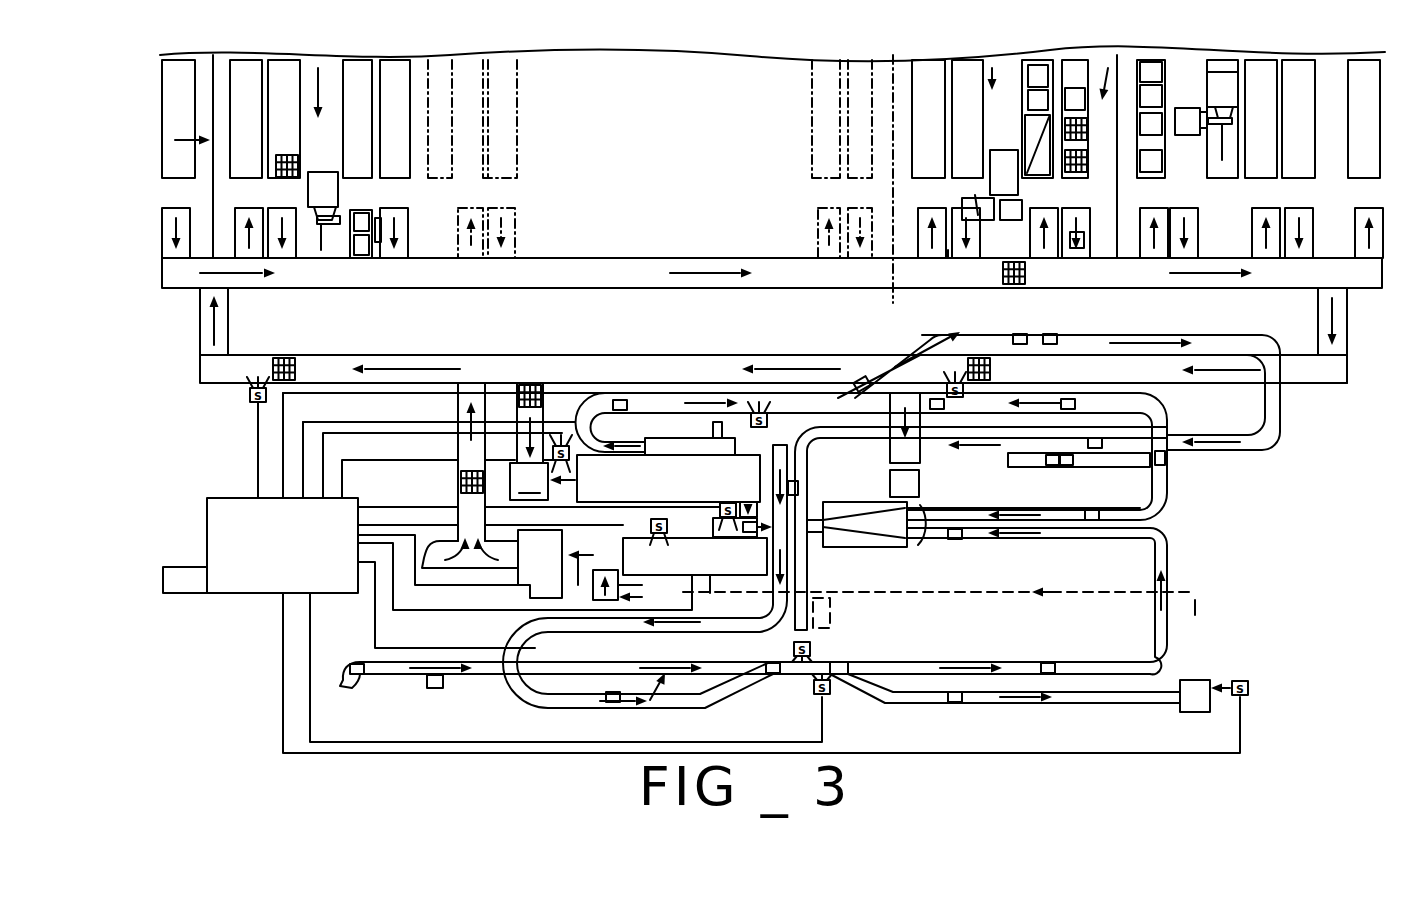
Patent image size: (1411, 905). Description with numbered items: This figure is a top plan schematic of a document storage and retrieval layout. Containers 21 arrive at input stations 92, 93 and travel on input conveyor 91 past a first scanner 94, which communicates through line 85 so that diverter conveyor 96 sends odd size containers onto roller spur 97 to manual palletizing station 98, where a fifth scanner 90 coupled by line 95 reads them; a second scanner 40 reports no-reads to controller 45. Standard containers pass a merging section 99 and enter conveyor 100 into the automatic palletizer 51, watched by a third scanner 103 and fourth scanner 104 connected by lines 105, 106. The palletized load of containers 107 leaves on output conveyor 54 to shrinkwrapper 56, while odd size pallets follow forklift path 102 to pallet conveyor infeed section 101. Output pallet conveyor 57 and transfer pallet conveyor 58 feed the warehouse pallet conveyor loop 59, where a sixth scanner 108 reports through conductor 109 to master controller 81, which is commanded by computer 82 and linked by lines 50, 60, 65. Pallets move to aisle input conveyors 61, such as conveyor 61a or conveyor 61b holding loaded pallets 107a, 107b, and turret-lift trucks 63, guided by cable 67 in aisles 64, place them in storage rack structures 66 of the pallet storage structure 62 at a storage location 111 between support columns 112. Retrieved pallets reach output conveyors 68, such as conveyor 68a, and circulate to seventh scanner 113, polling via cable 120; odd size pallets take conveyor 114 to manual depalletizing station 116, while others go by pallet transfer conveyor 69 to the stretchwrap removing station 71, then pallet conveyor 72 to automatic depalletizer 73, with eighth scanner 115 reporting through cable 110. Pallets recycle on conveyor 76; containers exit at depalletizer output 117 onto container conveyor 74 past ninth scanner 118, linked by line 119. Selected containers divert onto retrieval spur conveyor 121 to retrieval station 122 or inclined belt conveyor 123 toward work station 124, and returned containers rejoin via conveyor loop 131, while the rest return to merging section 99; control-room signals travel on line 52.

The containers 21 is at (620, 400).
The second scanner 40 is at (832, 700).
The controller 45 is at (528, 742).
The communication line 50 is at (398, 455).
The automatic palletizer 51 is at (695, 576).
The flow arrow 52 is at (649, 702).
The output conveyor 54 is at (593, 579).
The automated shrinkwrapper 56 is at (503, 592).
The output pallet conveyor 57 is at (500, 543).
The transfer pallet conveyor 58 is at (458, 510).
The warehouse pallet conveyor loop 59 is at (635, 283).
The communication line 60 is at (443, 585).
The aisle input conveyors 61 is at (240, 208).
The aisle input conveyor 61a is at (1068, 258).
The aisle input conveyor 61b is at (372, 255).
The pallet storage structure 62 is at (540, 95).
The turret-lift truck 63 is at (308, 190).
The aisles 64 is at (642, 104).
The communication line 65 is at (455, 612).
The storage rack structures 66 is at (230, 80).
The cable 67 is at (323, 117).
The output conveyors 68 is at (517, 238).
The output conveyor 68a is at (950, 258).
The pallet transfer conveyor 69 is at (525, 430).
The manual stretchwrap removing station 71 is at (529, 481).
The pallet conveyor 72 is at (562, 502).
The automatic depalletizer 73 is at (720, 456).
The container conveyor 74 is at (1025, 400).
The pallet recycle conveyor 76 is at (667, 533).
The master controller 81 is at (252, 595).
The computer 82 is at (183, 595).
The line 85 is at (480, 650).
The fifth scanner 90 is at (1250, 690).
The input conveyor 91 is at (392, 676).
The input station 92 is at (345, 690).
The input station 93 is at (435, 690).
The first scanner 94 is at (812, 648).
The line 95 is at (281, 690).
The diverter conveyor 96 is at (850, 666).
The roller spur 97 is at (905, 703).
The manual palletizing station 98 is at (1182, 712).
The merging section 99 is at (872, 547).
The conveyor 100 is at (812, 532).
The pallet conveyor infeed section 101 is at (648, 588).
The forklift path 102 is at (1197, 607).
The third scanner 103 is at (720, 514).
The fourth scanner 104 is at (650, 522).
The line 105 is at (375, 495).
The line 106 is at (398, 520).
The palletized load of containers 107 is at (1020, 175).
The loaded pallet 107a is at (370, 218).
The loaded pallet 107b is at (383, 258).
The sixth scanner 108 is at (248, 400).
The conductor 109 is at (256, 452).
The cable 110 is at (362, 435).
The storage location 111 is at (1035, 132).
The support columns 112 is at (1028, 72).
The seventh scanner 113 is at (962, 398).
The conveyor 114 is at (889, 424).
The eighth scanner 115 is at (562, 445).
The manual depalletizing station 116 is at (920, 488).
The depalletizer output 117 is at (705, 430).
The ninth scanner 118 is at (770, 422).
The line 119 is at (658, 413).
The cable 120 is at (328, 396).
The retrieval spur conveyor 121 is at (868, 370).
The retrieval station 122 is at (1088, 467).
The inclined belt conveyor 123 is at (810, 466).
The suspense retrieval work station 124 is at (830, 610).
The conveyor loop 131 is at (615, 625).